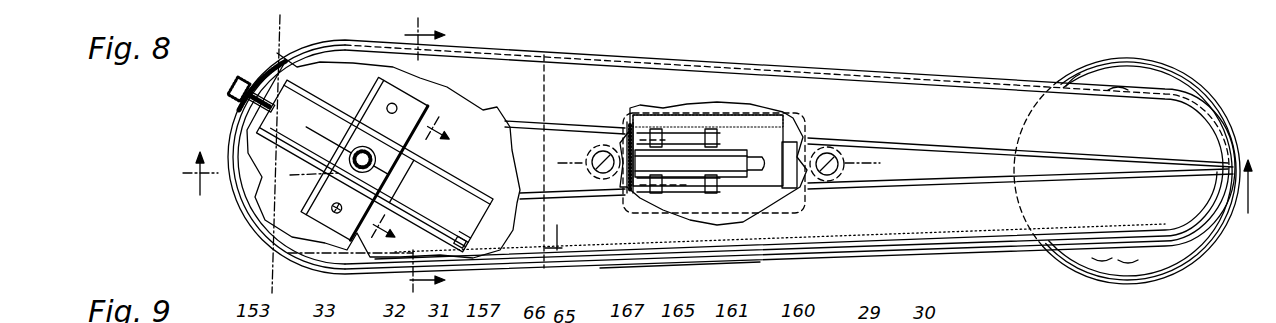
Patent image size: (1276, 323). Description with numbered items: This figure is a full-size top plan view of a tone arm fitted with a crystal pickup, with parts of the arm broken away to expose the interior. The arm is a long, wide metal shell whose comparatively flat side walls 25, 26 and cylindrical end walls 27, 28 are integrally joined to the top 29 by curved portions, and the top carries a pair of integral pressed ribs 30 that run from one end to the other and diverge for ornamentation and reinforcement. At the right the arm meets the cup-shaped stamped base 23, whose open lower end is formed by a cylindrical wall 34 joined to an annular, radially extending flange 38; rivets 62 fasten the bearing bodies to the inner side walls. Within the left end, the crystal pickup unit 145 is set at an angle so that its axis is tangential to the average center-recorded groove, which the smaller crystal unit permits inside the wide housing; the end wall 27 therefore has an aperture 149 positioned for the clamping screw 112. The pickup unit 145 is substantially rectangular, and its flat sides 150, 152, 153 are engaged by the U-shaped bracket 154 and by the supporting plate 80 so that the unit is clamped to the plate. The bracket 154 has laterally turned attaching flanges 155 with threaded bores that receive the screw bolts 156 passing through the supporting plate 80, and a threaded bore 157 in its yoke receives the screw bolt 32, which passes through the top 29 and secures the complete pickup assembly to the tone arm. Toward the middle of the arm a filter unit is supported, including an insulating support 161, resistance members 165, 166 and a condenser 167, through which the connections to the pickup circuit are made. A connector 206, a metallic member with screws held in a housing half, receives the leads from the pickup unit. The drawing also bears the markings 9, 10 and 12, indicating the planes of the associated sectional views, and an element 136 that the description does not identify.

The section line 9- 9 is at (717, 154).
The section line 10- 10 is at (379, 155).
The section line 12- 12 is at (421, 183).
The base 23 is at (1179, 278).
The side wall 25 is at (776, 70).
The side wall 26 is at (690, 266).
The end wall 27 is at (233, 131).
The end wall 28 is at (1212, 121).
The top 29 is at (940, 137).
The pressed ribs 30 is at (951, 186).
The screw bolt 32 is at (376, 163).
The cylindrical wall 34 is at (1080, 74).
The annular flange 38 is at (1127, 268).
The rivets 62 is at (1074, 86).
The supporting plate 80 is at (491, 137).
The clamping screw 112 is at (375, 158).
The lower hole 136 is at (352, 232).
The crystal pickup unit 145 is at (467, 191).
The aperture 149 is at (258, 88).
The flat side 150 is at (338, 108).
The flat side 152 is at (295, 176).
The flat side 153 is at (255, 110).
The U-shaped bracket 154 is at (360, 130).
The attaching flanges 155 is at (420, 96).
The screw bolts 156 is at (412, 104).
The threaded bore 157 is at (373, 178).
The insulating support 161 is at (785, 185).
The resistance member 165 is at (682, 208).
The resistance member 166 is at (700, 150).
The condenser 167 is at (668, 140).
The connector 206 is at (487, 240).